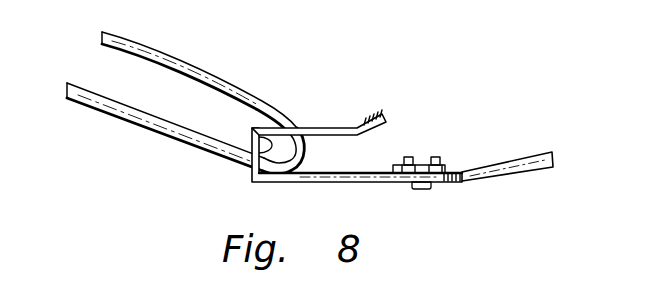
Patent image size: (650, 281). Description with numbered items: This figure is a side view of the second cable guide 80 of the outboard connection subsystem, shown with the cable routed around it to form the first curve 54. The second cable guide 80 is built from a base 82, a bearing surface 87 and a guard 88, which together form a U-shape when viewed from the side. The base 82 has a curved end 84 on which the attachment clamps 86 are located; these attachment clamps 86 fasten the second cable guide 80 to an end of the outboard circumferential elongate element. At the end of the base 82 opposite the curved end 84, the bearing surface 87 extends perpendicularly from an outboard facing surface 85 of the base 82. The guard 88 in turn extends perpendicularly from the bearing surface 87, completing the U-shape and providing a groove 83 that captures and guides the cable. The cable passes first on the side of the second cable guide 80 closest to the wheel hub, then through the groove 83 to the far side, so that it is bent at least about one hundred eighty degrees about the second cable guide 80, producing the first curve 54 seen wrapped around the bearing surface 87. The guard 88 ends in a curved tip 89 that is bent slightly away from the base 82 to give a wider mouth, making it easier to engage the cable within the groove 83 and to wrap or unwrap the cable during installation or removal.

The first curve 54 is at (250, 166).
The second cable guide 80 is at (405, 65).
The base 82 is at (320, 182).
The groove 83 is at (378, 146).
The curved end 84 is at (466, 182).
The outboard facing surface 85 is at (338, 168).
The attachment clamps 86 is at (410, 156).
The bearing surface 87 is at (272, 131).
The guard 88 is at (358, 128).
The curved tip 89 is at (388, 114).